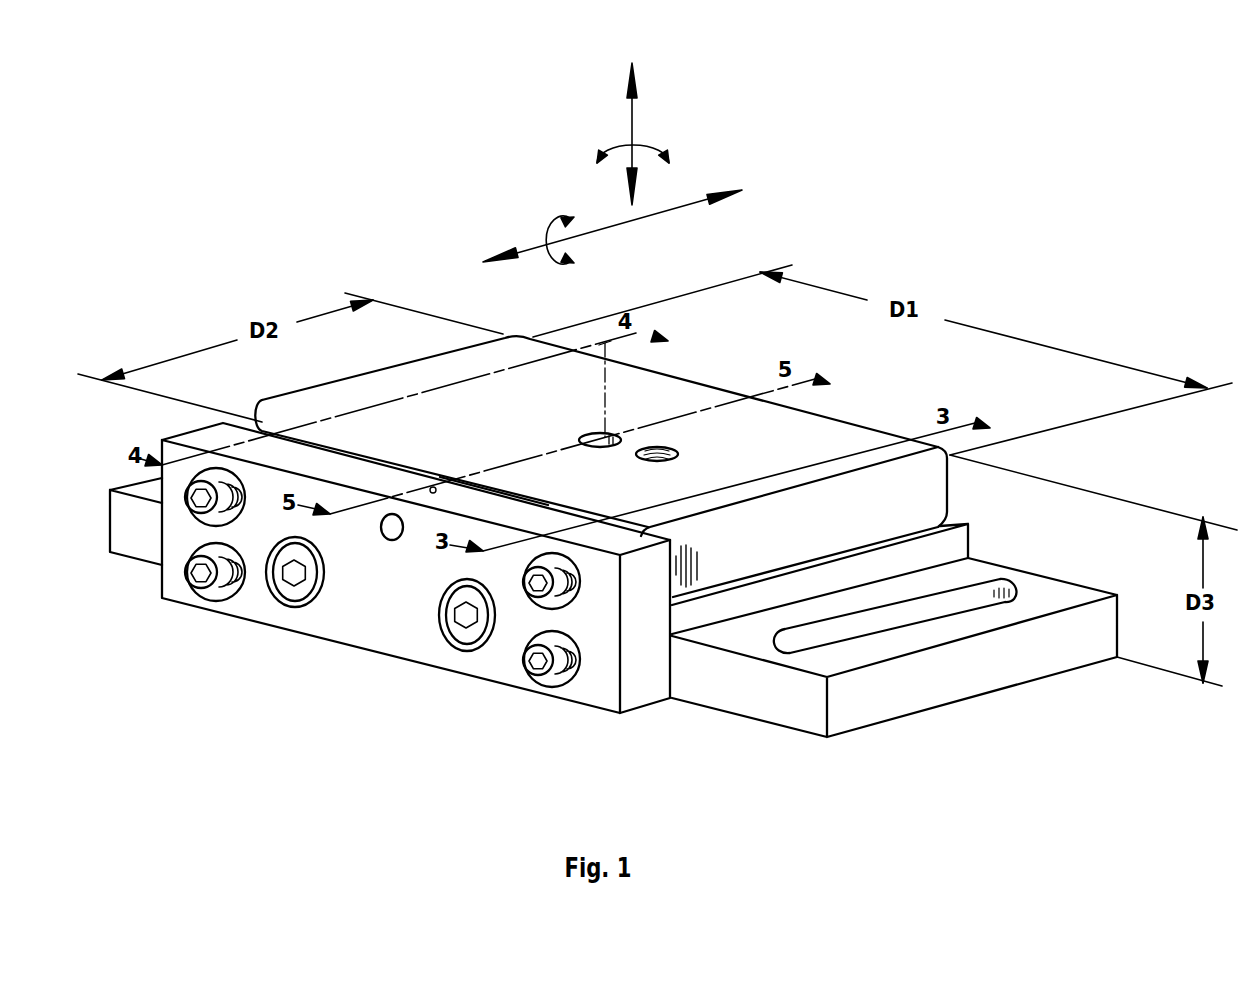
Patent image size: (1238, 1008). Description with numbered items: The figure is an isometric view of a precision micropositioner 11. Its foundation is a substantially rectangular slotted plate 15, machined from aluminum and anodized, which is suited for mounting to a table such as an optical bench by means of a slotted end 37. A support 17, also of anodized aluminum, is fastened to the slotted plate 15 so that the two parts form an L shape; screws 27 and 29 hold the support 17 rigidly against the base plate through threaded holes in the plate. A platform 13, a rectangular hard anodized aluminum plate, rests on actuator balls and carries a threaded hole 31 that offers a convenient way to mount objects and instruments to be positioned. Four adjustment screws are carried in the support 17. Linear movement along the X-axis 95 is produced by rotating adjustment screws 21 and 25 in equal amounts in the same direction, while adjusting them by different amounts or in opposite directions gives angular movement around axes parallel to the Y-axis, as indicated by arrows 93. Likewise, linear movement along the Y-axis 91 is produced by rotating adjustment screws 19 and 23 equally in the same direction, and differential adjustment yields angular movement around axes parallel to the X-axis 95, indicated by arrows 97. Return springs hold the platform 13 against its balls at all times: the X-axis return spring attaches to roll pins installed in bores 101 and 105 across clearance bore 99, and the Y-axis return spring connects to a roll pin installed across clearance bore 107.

The precision micropositioner 11 is at (344, 216).
The platform 13 is at (873, 437).
The slotted plate 15 is at (957, 523).
The support 17 is at (638, 688).
The adjustment screw 19 is at (190, 572).
The adjustment screw 21 is at (188, 503).
The adjustment screw 23 is at (532, 676).
The adjustment screw 25 is at (567, 587).
The screw 27 is at (290, 597).
The screw 29 is at (452, 638).
The threaded hole 31 is at (660, 449).
The slotted end 37 is at (1003, 580).
The Y-axis 91 is at (633, 135).
The arrows 93 is at (613, 145).
The X-axis 95 is at (683, 206).
The arrows 97 is at (547, 223).
The clearance bore 99 is at (380, 528).
The bore 101 is at (433, 487).
The bore 105 is at (491, 464).
The clearance bore 107 is at (592, 430).